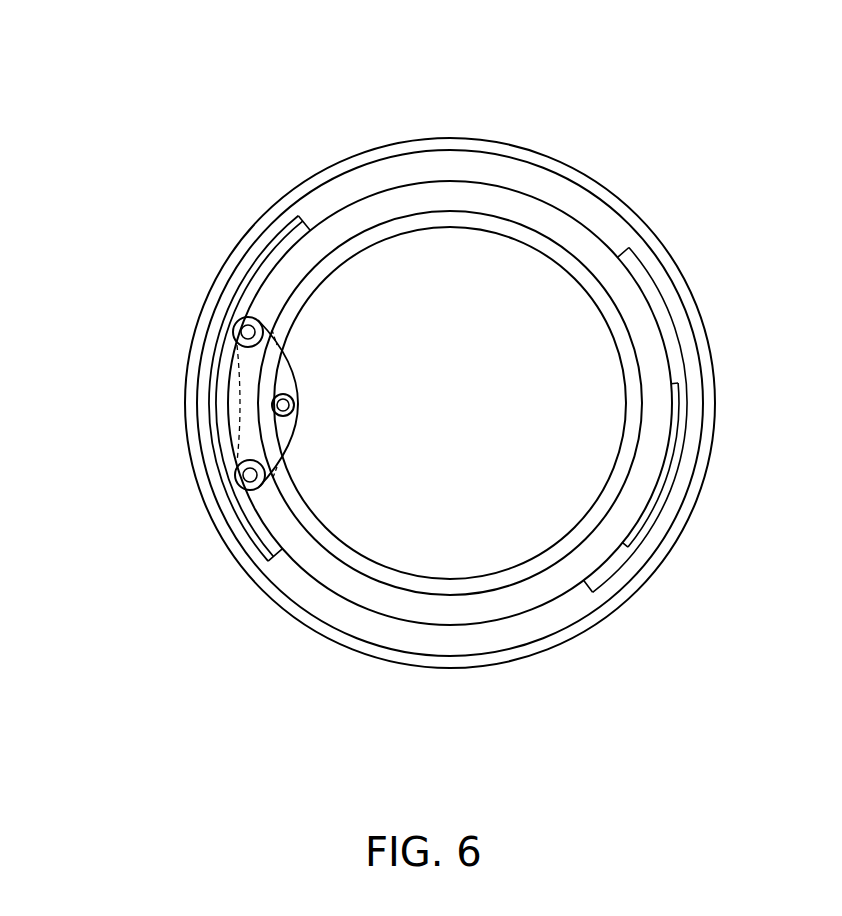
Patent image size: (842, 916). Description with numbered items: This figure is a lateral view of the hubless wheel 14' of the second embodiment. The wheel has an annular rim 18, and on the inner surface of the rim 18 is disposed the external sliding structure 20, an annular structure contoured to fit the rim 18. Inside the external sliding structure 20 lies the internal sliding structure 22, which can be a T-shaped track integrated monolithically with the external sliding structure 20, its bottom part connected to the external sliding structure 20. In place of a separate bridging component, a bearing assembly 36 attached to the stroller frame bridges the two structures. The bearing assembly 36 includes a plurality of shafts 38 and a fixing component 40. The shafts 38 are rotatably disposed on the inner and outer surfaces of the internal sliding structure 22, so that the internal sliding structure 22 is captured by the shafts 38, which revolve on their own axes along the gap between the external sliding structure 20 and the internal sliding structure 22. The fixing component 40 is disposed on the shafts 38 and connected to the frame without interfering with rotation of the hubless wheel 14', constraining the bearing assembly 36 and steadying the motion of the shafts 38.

The hubless wheel 14' is at (460, 335).
The rim 18 is at (603, 200).
The external sliding structure 20 is at (280, 237).
The internal sliding structure 22 is at (443, 217).
The bearing assembly 36 is at (170, 407).
The shafts 38 is at (248, 332).
The fixing component 40 is at (287, 432).